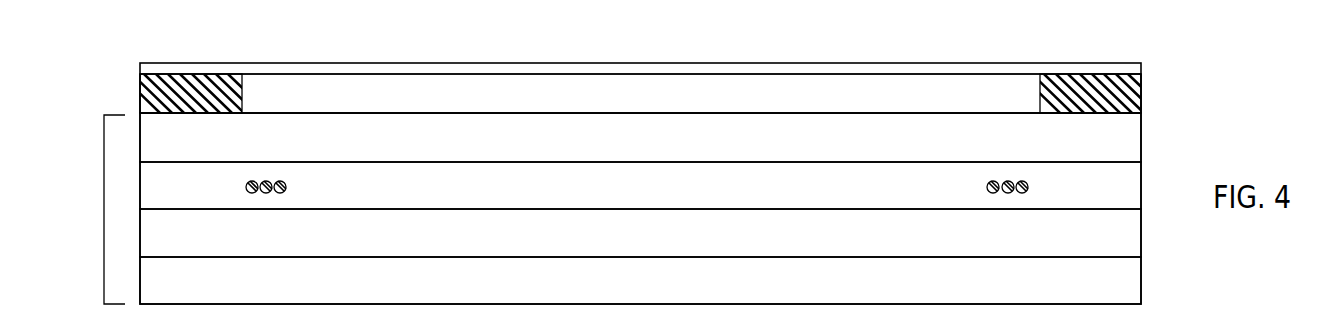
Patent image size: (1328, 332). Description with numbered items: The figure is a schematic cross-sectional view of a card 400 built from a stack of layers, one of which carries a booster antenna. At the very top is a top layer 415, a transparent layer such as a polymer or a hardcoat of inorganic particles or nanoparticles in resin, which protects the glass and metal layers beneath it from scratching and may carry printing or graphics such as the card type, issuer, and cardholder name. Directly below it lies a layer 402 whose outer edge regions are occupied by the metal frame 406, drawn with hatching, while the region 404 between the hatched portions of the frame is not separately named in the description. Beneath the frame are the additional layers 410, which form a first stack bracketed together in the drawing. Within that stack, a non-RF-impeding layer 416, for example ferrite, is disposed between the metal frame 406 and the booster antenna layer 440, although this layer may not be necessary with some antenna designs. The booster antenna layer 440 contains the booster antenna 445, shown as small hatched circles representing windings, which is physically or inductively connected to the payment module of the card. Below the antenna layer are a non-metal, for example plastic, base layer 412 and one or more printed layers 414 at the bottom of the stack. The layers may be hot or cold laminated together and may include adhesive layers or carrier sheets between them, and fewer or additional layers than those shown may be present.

The card 400 is at (126, 52).
The cover layer 402 is at (126, 94).
The cover glass / top layer 404 is at (555, 106).
The metal frame 406 is at (246, 100).
The first stack of additional layers 410 is at (103, 182).
The base layer 412 is at (555, 242).
The printed layers 414 is at (555, 292).
The top layer 415 is at (662, 68).
The non-RF-impeding layer 416 is at (555, 150).
The booster antenna layer 440 is at (555, 196).
The booster antenna 445 is at (290, 187).